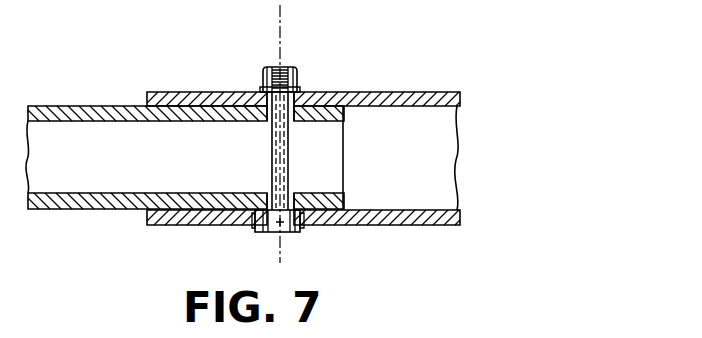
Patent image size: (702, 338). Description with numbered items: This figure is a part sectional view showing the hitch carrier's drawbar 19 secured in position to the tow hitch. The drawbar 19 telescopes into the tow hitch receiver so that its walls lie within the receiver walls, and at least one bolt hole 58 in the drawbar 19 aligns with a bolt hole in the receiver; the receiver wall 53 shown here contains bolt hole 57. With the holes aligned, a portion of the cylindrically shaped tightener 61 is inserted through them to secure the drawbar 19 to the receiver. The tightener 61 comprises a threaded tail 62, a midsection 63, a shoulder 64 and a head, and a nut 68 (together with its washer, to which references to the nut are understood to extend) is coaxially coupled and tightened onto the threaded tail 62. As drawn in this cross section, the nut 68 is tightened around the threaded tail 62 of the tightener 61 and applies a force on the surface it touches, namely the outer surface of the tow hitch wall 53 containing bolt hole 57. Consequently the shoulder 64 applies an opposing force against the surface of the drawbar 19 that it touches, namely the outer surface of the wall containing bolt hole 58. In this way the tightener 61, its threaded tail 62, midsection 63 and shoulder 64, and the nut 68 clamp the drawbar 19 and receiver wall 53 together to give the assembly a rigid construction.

The drawbar 19 is at (76, 106).
The tow hitch receiver wall 53 is at (398, 107).
The bolt hole 57 is at (341, 92).
The bolt hole 58 is at (293, 188).
The tightener 61 is at (298, 245).
The threaded tail 62 is at (263, 89).
The midsection 63 is at (278, 163).
The shoulder 64 is at (267, 193).
The nut 68 is at (300, 74).